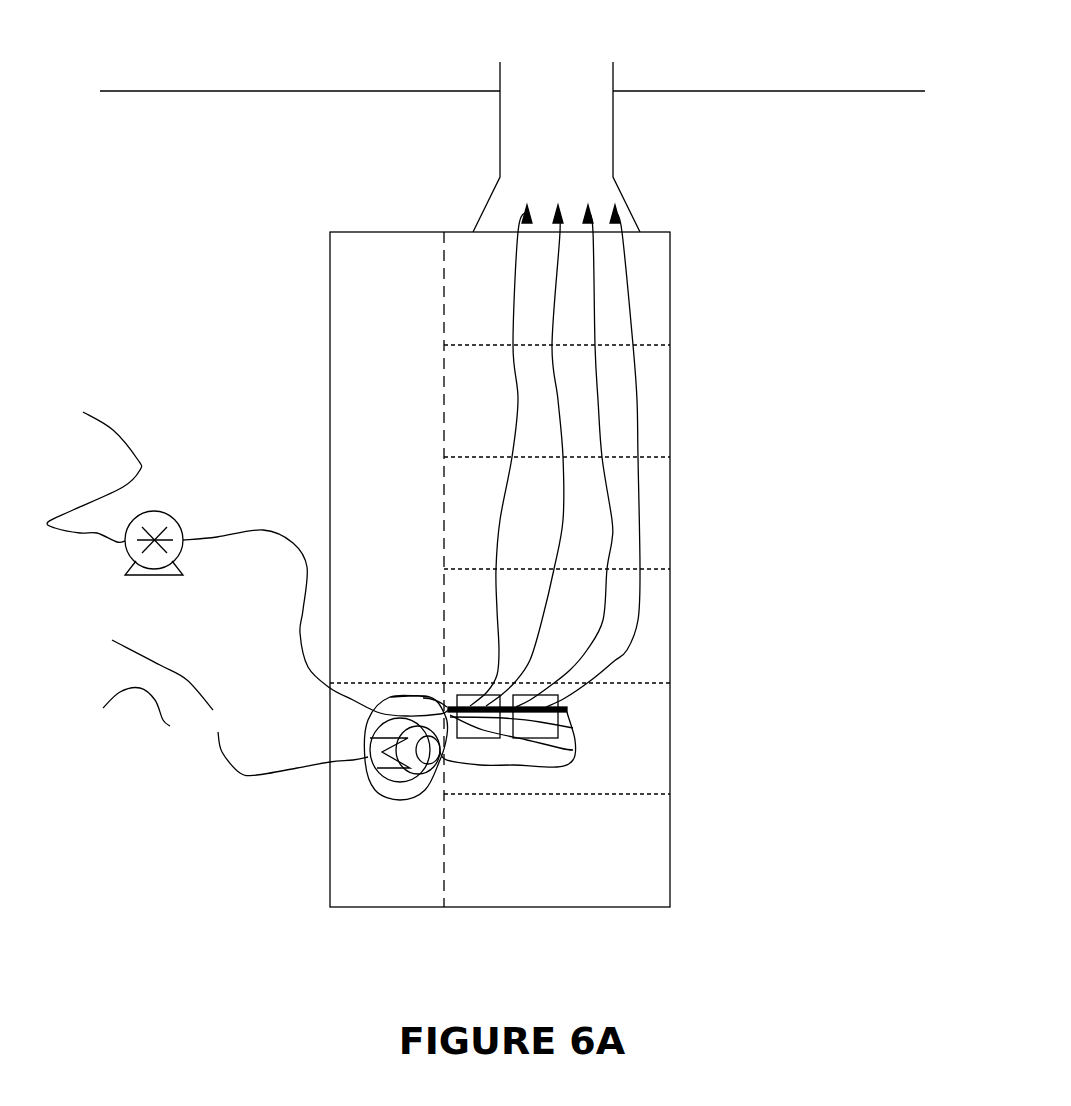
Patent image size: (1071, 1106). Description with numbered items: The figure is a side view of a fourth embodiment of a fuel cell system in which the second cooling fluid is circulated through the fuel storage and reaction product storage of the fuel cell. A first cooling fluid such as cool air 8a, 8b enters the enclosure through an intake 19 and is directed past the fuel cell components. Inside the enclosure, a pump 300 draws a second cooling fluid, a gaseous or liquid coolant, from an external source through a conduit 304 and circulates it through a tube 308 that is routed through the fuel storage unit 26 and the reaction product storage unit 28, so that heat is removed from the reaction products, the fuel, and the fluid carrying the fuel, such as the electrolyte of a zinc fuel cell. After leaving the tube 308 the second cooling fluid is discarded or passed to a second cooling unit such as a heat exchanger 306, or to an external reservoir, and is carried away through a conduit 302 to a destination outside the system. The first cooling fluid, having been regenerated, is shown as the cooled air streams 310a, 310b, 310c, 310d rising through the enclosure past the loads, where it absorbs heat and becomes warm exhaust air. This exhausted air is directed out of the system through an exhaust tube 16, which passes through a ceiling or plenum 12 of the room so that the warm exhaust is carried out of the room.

The ceiling or plenum 12 is at (727, 91).
The exhaust tube 16 is at (614, 80).
The intake 19 is at (670, 708).
The fuel storage unit 26 is at (490, 695).
The reaction product storage unit 28 is at (528, 695).
The pump 300 is at (157, 512).
The conduit 302 is at (187, 682).
The conduit 304 is at (112, 427).
The heat exchanger 306 is at (387, 793).
The tube 308 is at (567, 709).
The regenerated first cooling fluid 310a is at (495, 279).
The regenerated first cooling fluid 310b is at (530, 335).
The regenerated first cooling fluid 310c is at (616, 289).
The regenerated first cooling fluid 310d is at (652, 332).
The first cooling fluid 8a is at (736, 740).
The first cooling fluid 8b is at (596, 738).